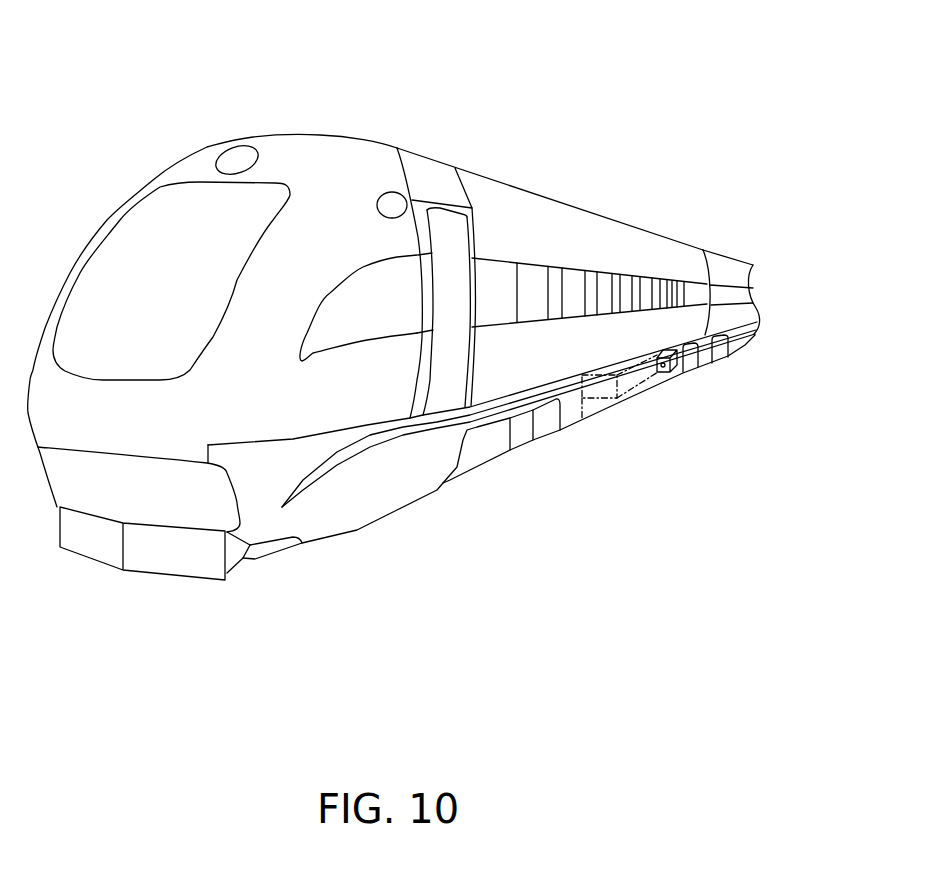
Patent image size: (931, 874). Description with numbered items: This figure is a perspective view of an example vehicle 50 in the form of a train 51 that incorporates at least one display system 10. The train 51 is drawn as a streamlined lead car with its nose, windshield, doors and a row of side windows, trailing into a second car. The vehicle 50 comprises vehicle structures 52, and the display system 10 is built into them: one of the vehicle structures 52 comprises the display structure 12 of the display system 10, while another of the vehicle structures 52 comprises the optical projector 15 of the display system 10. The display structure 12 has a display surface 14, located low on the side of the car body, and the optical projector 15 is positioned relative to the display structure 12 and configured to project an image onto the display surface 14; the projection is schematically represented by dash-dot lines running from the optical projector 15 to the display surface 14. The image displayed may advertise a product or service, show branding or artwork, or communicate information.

The vehicle 50 is at (727, 77).
The train 51 is at (642, 87).
The vehicle structures 52 is at (557, 97).
The display system 10 is at (657, 400).
The display structure 12 is at (587, 418).
The display surface 14 is at (599, 388).
The optical projector 15 is at (676, 372).